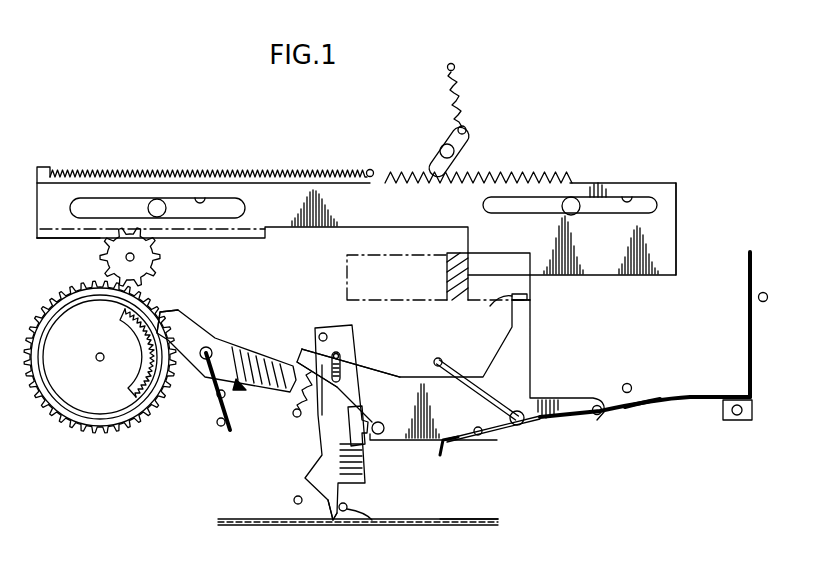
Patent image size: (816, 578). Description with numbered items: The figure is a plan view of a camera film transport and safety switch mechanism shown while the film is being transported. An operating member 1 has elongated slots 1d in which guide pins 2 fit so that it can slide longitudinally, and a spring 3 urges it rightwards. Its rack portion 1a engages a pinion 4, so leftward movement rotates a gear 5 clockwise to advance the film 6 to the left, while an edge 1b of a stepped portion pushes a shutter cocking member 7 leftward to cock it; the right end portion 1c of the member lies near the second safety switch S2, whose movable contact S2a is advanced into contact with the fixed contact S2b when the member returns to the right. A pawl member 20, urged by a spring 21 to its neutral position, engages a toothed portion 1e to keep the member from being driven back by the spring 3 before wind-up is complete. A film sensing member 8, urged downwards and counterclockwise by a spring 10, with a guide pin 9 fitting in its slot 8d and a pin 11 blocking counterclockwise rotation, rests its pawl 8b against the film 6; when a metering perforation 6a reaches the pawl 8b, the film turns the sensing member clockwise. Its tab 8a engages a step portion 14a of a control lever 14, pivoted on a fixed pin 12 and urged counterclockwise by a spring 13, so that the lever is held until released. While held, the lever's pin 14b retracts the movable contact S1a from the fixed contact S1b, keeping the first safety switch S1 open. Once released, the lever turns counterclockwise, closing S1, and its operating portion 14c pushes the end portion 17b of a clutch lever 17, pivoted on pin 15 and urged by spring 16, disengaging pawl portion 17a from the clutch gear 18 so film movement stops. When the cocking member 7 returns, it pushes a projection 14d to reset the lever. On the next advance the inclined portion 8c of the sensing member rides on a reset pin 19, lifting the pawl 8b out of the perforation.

The operating member 1 is at (638, 276).
The rack portion 1a is at (62, 239).
The edge of stepped portion 1b is at (470, 262).
The right end portion of base plate 1c is at (676, 268).
The elongated slots 1d is at (203, 198).
The toothed portion 1e is at (528, 178).
The guide pins 2 is at (157, 199).
The spring 3 is at (275, 170).
The pinion 4 is at (145, 258).
The gear 5 is at (95, 428).
The film 6 is at (230, 526).
The film metering perforation 6a is at (460, 526).
The shutter cocking member 7 is at (450, 265).
The film sensing member 8 is at (352, 327).
The tab 8a is at (370, 450).
The pawl 8b is at (343, 511).
The inclined portion 8c is at (330, 521).
The slot 8d is at (340, 356).
The guide pin 9 is at (304, 403).
The spring 10 is at (293, 415).
The pin 11 is at (372, 522).
The fixed pin 12 is at (518, 427).
The spring 13 is at (475, 441).
The control lever 14 is at (531, 355).
The step portion 14a is at (382, 434).
The pin 14b is at (597, 404).
The operating portion 14c is at (300, 352).
The projection 14d is at (508, 296).
The pin 15 is at (208, 348).
The spring 16 is at (212, 405).
The clutch lever 17 is at (195, 355).
The pawl portion 17a is at (163, 318).
The end portion 17b is at (238, 388).
The clutch gear 18 is at (140, 395).
The reset pin 19 is at (296, 497).
The pawl member 20 is at (432, 170).
The spring 21 is at (457, 95).
The first safety switch S1 is at (668, 396).
The movable contact S1a is at (640, 404).
The fixed contact S1b is at (636, 398).
The second safety switch S2 is at (752, 290).
The movable contact S2a is at (748, 307).
The fixed contact S2b is at (765, 302).